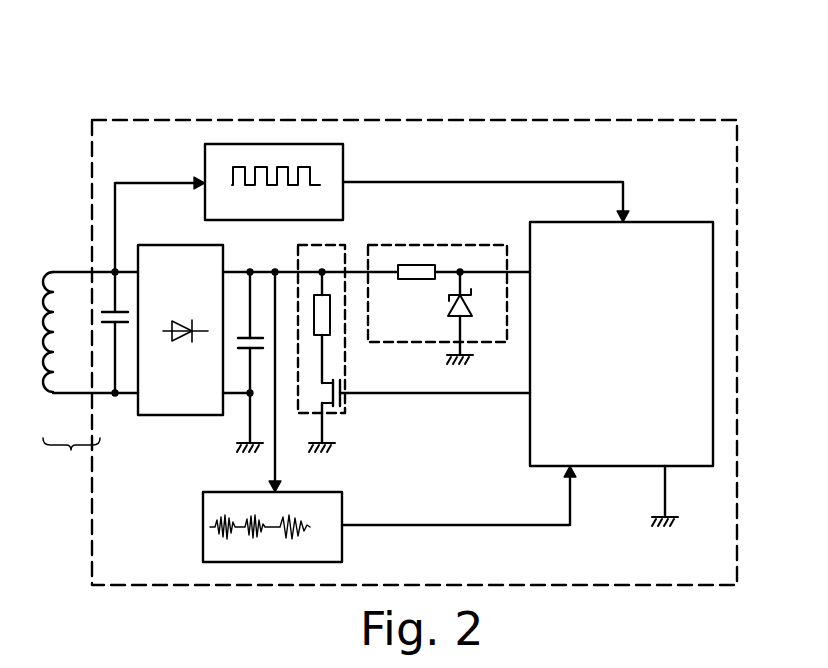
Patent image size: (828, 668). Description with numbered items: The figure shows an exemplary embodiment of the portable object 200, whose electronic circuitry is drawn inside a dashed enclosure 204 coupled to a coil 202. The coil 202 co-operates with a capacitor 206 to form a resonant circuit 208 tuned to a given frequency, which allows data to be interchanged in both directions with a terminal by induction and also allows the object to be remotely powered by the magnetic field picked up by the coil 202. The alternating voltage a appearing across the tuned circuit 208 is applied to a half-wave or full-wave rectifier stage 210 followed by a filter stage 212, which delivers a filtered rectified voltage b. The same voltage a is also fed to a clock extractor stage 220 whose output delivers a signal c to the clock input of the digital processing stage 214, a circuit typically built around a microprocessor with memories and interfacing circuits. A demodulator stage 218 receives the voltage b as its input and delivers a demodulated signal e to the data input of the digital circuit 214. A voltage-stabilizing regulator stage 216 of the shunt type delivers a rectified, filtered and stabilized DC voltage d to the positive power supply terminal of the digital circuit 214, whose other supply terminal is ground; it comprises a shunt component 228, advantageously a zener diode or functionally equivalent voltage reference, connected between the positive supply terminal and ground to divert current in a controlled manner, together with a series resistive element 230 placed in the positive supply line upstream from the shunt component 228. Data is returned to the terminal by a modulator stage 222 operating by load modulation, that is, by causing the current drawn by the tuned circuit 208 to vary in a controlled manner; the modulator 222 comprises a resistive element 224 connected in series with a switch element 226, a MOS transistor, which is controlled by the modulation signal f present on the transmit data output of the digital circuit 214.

The circuit arrangement 200 is at (88, 100).
The coil 202 is at (44, 276).
The transponder circuit (dashed enclosure) 204 is at (512, 117).
The capacitor 206 is at (118, 396).
The resonant circuit 208 is at (71, 459).
The rectifier stage 210 is at (165, 417).
The filter stage 212 is at (240, 352).
The digital processing stage 214 is at (688, 222).
The regulator stage 216 is at (445, 245).
The demodulator stage 218 is at (203, 500).
The clock extractor stage 220 is at (205, 150).
The modulator stage 222 is at (347, 414).
The resistive element 224 is at (331, 298).
The switch element 226 is at (344, 384).
The shunt component 228 is at (450, 312).
The series resistive element 230 is at (416, 280).
The alternating voltage a is at (118, 268).
The filtered rectified voltage b is at (276, 268).
The clock signal c is at (415, 182).
The DC voltage d is at (462, 267).
The demodulated signal e is at (425, 524).
The modulation signal f is at (482, 395).